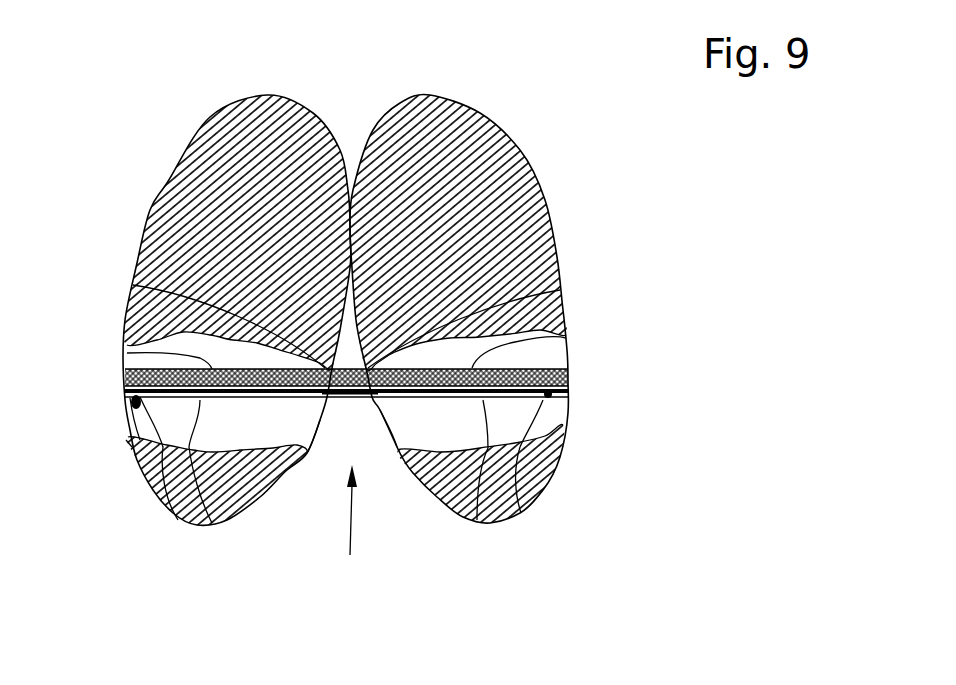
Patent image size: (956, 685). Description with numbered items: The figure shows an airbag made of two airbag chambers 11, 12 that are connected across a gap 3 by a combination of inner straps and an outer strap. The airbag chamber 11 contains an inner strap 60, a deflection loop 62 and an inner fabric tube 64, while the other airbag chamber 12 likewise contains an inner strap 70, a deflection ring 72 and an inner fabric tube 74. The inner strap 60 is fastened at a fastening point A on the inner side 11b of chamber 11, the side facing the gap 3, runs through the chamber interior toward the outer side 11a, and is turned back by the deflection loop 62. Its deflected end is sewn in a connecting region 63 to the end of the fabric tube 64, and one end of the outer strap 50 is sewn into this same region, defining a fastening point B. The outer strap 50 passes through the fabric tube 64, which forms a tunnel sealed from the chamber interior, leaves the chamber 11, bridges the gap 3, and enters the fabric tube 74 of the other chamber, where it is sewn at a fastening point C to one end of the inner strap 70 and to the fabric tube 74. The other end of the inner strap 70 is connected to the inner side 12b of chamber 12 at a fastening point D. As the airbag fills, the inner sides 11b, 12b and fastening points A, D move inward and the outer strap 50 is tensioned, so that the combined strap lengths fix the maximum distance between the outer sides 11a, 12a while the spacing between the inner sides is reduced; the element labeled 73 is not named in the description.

The airbag chamber 11 is at (157, 224).
The airbag chamber 12 is at (527, 205).
The fastening point A is at (133, 285).
The fastening point D is at (560, 290).
The inner strap 60 is at (125, 352).
The inner strap 70 is at (562, 338).
The deflection ring 72 is at (577, 369).
The deflection loop 62 is at (122, 400).
The second connecting point 73 is at (568, 408).
The fastening point B is at (126, 440).
The outer side 12a is at (565, 446).
The outer side 11a is at (132, 465).
The outer strap 50 is at (352, 403).
The inner side 11b is at (303, 453).
The inner side 12b is at (403, 458).
The connecting region 63 is at (163, 497).
The fabric tube 64 is at (205, 518).
The gap 3 is at (353, 529).
The fabric tube 74 is at (473, 517).
The fastening point C is at (520, 515).